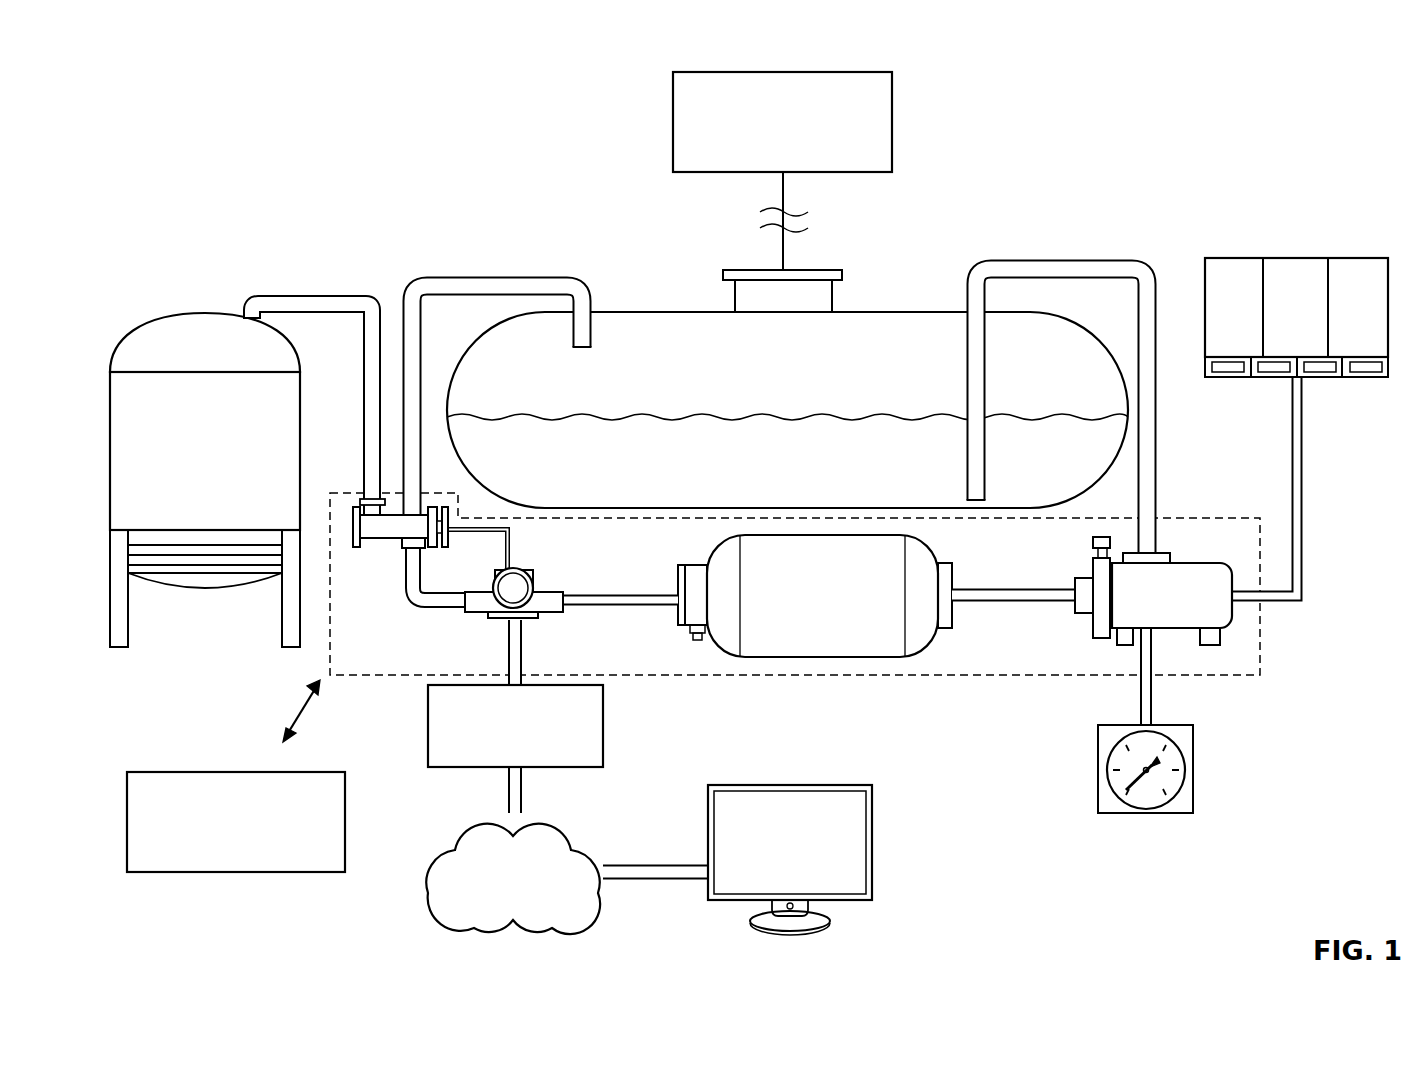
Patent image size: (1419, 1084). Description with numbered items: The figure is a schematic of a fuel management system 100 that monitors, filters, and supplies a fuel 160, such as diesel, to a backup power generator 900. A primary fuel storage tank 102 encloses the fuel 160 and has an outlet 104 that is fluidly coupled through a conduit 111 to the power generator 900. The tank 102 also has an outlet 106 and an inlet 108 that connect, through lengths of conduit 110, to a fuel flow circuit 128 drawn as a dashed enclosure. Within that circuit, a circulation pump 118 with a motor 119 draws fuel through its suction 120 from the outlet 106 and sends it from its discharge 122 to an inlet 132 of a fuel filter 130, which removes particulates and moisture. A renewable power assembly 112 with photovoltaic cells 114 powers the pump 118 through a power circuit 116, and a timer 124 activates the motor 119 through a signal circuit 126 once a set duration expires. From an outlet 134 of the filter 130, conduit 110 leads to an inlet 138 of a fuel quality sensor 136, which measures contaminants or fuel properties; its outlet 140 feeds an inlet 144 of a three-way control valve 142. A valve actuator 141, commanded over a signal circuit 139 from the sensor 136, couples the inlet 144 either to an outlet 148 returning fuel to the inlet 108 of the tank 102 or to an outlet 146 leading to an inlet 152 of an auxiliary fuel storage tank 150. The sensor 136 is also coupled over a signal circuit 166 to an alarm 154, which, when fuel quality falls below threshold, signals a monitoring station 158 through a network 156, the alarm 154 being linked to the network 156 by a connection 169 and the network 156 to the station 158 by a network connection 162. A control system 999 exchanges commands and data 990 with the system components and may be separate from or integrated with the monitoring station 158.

The fuel management system 100 is at (749, 495).
The primary fuel storage tank 102 is at (787, 372).
The outlet 104 is at (823, 268).
The outlet 106 is at (963, 312).
The inlet 108 is at (597, 310).
The conduit 110 is at (311, 294).
The conduit 111 is at (780, 192).
The renewable power assembly 112 is at (1296, 279).
The photovoltaic cell 114 is at (1233, 268).
The power circuit 116 is at (1300, 460).
The circulation pump 118 is at (1195, 567).
The motor 119 is at (1216, 609).
The suction 120 is at (1160, 553).
The discharge 122 is at (1085, 612).
The timer 124 is at (1195, 768).
The signal circuit 126 is at (1154, 687).
The fuel flow circuit 128 is at (1038, 688).
The fuel filter 130 is at (818, 668).
The inlet 132 is at (952, 607).
The outlet 134 is at (677, 607).
The fuel quality sensor 136 is at (540, 577).
The inlet 138 is at (568, 598).
The signal circuit 139 is at (512, 552).
The outlet 140 is at (455, 594).
The valve actuator 141 is at (410, 514).
The control valve 142 is at (430, 525).
The inlet 144 is at (416, 602).
The outlet 146 is at (360, 505).
The outlet 148 is at (450, 512).
The auxiliary fuel storage tank 150 is at (184, 308).
The inlet 152 is at (248, 320).
The alarm 154 is at (603, 742).
The network 156 is at (465, 820).
The monitoring station 158 is at (800, 785).
The fuel 160 is at (635, 432).
The network connection 162 is at (645, 880).
The signal circuit 166 is at (523, 652).
The communication link 169 is at (522, 778).
The backup power generator 900 is at (742, 70).
The commands/data 990 is at (295, 712).
The control system 999 is at (193, 770).